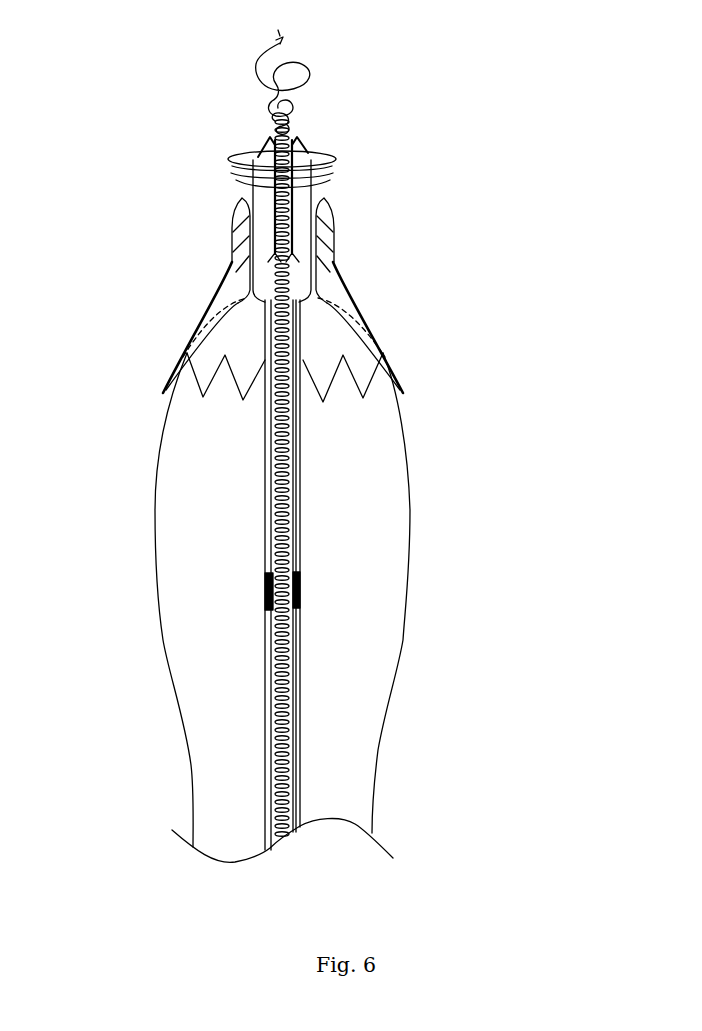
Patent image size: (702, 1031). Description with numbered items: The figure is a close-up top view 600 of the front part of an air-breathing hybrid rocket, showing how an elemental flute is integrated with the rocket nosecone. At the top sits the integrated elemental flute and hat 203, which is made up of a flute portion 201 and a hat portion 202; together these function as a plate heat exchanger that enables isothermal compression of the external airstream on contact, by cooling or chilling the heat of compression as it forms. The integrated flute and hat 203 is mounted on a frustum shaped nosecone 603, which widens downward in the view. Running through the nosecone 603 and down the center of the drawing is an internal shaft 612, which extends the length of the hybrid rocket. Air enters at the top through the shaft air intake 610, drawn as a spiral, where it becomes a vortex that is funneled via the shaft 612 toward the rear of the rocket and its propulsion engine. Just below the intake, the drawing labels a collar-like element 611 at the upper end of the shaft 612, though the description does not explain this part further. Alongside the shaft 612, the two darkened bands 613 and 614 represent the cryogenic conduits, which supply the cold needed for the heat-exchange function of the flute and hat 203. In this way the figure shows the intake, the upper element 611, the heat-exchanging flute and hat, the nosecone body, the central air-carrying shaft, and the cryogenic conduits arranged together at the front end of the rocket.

The close-up top view 600 is at (168, 703).
The frustum shaped nosecone 603 is at (398, 423).
The shaft air intake 610 is at (305, 92).
The collar cap 611 is at (237, 148).
The shaft 612 is at (297, 662).
The cryogenic conduit 613 is at (268, 593).
The cryogenic conduit 614 is at (300, 593).
The flute portion 201 is at (340, 218).
The hat portion 202 is at (365, 292).
The integrated elemental flute and hat 203 is at (232, 258).